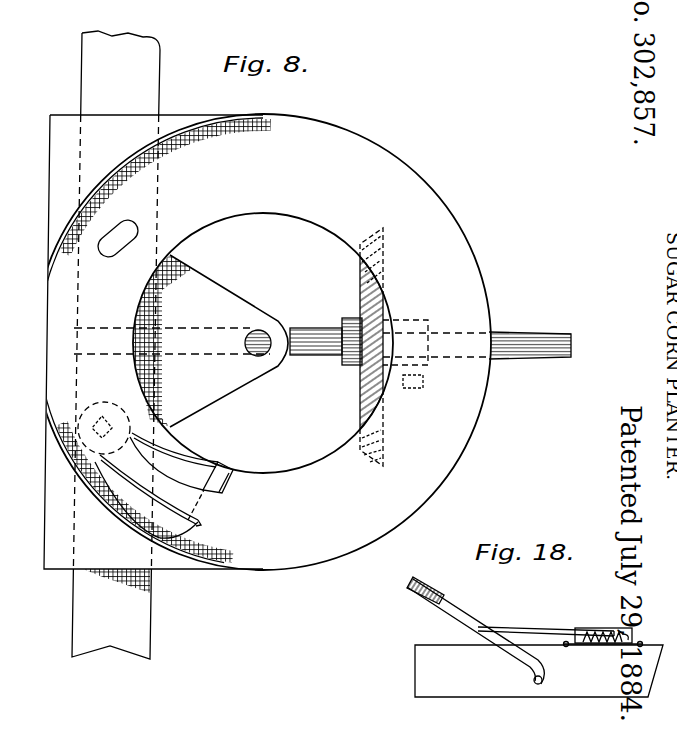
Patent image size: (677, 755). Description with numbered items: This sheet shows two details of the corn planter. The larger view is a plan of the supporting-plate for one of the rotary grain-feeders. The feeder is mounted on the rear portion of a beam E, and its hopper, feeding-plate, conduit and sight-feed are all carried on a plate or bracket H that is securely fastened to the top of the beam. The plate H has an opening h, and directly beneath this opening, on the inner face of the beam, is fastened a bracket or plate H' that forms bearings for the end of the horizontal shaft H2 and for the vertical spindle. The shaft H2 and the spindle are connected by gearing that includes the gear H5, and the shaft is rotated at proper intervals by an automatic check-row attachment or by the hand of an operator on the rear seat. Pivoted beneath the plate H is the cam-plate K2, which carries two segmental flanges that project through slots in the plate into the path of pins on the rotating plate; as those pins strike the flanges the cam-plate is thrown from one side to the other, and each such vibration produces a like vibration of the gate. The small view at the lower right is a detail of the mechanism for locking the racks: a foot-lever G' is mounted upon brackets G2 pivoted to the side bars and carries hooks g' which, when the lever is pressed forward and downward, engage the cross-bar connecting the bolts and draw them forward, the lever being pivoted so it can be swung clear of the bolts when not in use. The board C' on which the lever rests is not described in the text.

In FIG. 8, the beam E is at (116, 345).
In FIG. 8, the plate H is at (263, 342).
In FIG. 8, the bracket H' is at (211, 341).
In FIG. 8, the gear H5 is at (348, 347).
In FIG. 8, the horizontal shaft H2 is at (522, 360).
In FIG. 8, the opening h is at (233, 343).
In FIG. 8, the cam-plate K2 is at (206, 457).
In FIG. 18, the foot-lever G' is at (475, 621).
In FIG. 18, the hook g' is at (546, 617).
In FIG. 18, the bracket G2 is at (607, 630).
In FIG. 18, the frame board C' is at (539, 671).